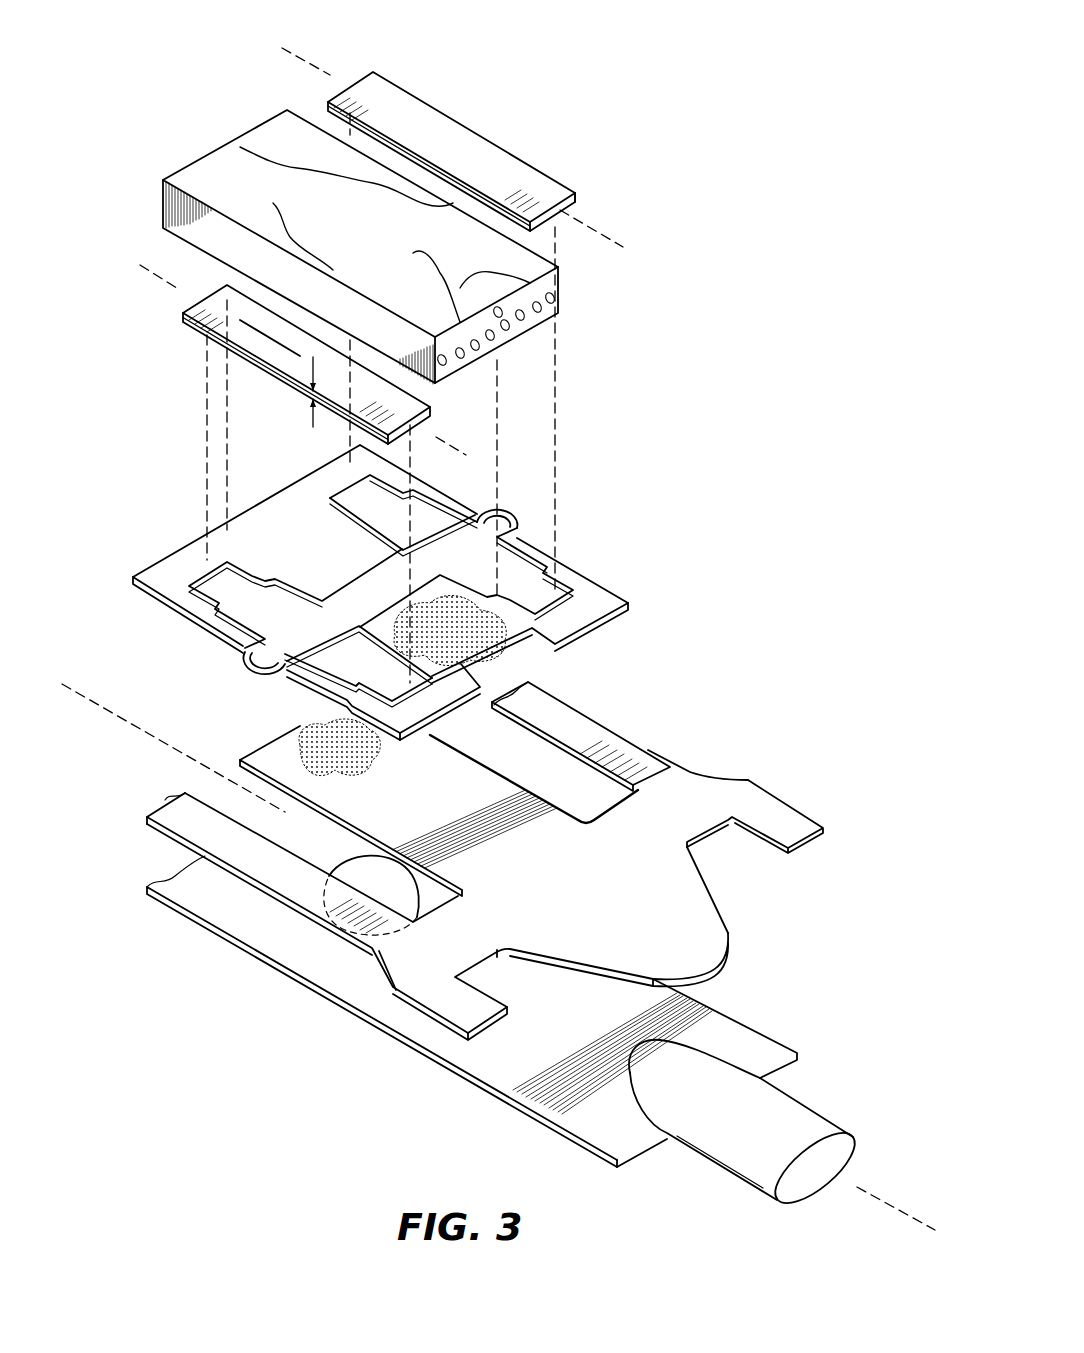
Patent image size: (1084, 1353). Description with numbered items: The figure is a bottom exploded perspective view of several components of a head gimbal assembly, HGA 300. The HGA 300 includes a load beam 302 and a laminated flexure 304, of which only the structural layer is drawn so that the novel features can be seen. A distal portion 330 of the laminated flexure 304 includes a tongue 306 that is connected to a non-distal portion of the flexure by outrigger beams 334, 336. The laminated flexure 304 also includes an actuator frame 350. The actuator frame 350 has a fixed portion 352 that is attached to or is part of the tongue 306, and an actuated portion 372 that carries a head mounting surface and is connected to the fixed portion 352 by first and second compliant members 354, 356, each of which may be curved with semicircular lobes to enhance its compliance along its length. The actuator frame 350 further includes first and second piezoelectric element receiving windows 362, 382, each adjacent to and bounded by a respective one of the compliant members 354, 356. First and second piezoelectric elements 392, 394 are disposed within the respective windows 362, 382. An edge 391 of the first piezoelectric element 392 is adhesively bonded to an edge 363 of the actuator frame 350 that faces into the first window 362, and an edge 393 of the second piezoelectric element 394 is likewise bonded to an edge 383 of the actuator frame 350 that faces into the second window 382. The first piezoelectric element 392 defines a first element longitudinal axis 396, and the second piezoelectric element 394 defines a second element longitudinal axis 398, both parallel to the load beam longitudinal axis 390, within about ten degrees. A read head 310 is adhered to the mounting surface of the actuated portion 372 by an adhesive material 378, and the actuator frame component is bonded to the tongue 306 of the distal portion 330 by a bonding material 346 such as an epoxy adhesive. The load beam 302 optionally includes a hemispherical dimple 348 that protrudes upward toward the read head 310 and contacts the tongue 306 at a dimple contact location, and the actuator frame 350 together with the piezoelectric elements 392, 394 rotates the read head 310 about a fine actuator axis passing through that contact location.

The HGA 300 is at (768, 174).
The load beam 302 is at (755, 1047).
The laminated flexure 304 is at (710, 788).
The tongue 306 is at (433, 731).
The read head 310 is at (237, 160).
The distal portion 330 is at (693, 917).
The outrigger beam 334 is at (213, 927).
The outrigger beam 336 is at (568, 718).
The bonding material 346 is at (303, 740).
The dimple 348 is at (360, 873).
The actuator frame 350 is at (624, 588).
The fixed portion 352 is at (345, 518).
The first compliant member 354 is at (243, 614).
The second compliant member 356 is at (513, 512).
The first piezoelectric element receiving window 362 is at (273, 613).
The edge 363 is at (208, 580).
The actuated portion 372 is at (507, 610).
The adhesive material 378 is at (437, 592).
The second piezoelectric element receiving window 382 is at (390, 510).
The edge 383 is at (597, 628).
The load beam longitudinal axis 390 is at (880, 1200).
The edge 391 is at (190, 322).
The first piezoelectric element 392 is at (285, 347).
The edge 393 is at (575, 207).
The second piezoelectric element 394 is at (495, 160).
The first element longitudinal axis 396 is at (160, 290).
The second element longitudinal axis 398 is at (305, 62).